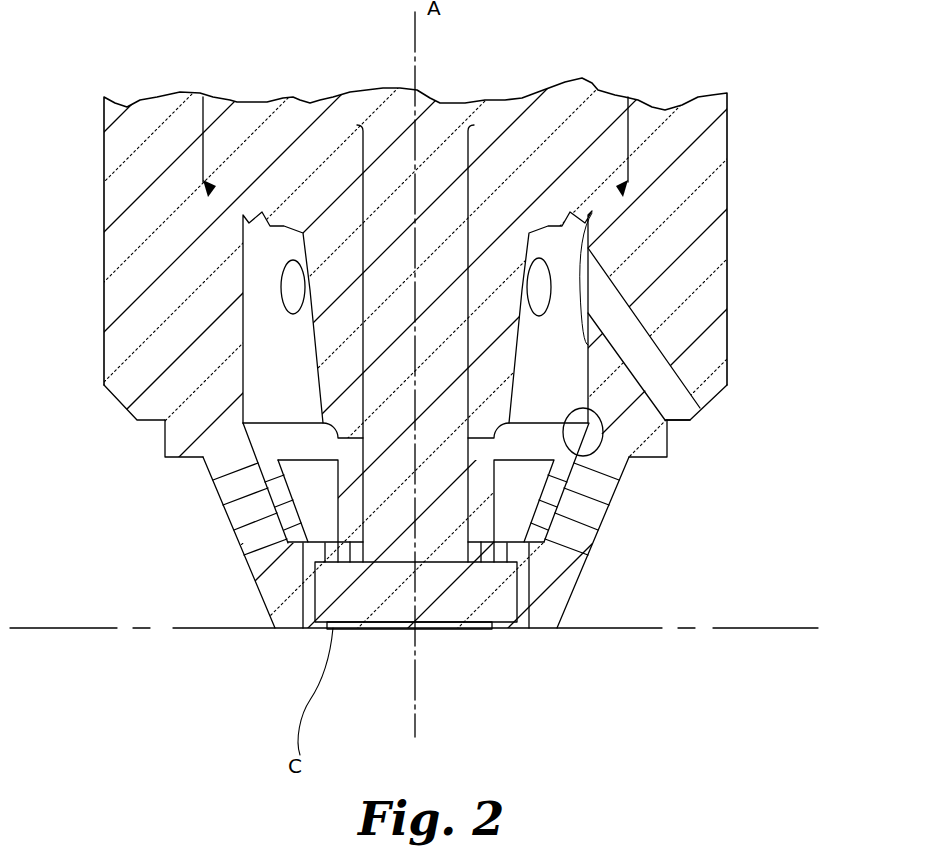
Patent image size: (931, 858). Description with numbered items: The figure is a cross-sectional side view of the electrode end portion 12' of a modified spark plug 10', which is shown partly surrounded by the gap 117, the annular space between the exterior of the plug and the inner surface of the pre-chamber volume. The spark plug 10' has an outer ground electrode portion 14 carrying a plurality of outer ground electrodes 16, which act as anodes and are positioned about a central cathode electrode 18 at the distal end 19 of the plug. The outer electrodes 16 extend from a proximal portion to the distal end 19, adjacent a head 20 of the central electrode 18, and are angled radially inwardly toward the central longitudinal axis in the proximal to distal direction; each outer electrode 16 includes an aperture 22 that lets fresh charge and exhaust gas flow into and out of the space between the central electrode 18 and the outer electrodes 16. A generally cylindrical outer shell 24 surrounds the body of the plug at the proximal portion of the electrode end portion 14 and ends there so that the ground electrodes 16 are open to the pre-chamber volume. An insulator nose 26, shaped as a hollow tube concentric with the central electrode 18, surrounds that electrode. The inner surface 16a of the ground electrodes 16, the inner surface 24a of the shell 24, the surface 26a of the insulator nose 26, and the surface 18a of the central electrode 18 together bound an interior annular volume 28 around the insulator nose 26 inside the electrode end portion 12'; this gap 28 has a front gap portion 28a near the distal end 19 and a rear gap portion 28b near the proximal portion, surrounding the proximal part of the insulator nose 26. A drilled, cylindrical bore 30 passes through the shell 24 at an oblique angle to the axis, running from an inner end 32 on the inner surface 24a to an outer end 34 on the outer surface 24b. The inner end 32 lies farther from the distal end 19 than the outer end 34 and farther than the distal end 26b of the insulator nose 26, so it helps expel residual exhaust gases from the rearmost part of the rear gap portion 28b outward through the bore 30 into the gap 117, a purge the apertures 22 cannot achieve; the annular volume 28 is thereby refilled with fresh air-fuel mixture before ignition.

The spark plug 10' is at (237, 371).
The electrode end portion 12' is at (465, 327).
The outer ground electrode portion 14 is at (236, 588).
The outer ground electrodes 16 is at (284, 612).
The inner surface of the ground electrodes 16a is at (667, 457).
The central cathode electrode 18 is at (370, 502).
The surface of the central electrode 18a is at (467, 622).
The distal end 19 is at (437, 642).
The head 20 is at (368, 600).
The aperture 22 is at (587, 510).
The outer shell 24 is at (690, 350).
The inner surface of the shell 24a is at (591, 213).
The outer surface of the shell 24b is at (717, 395).
The insulator nose 26 is at (340, 362).
The surface of the insulator nose 26a is at (572, 222).
The distal end of the insulator nose 26b is at (587, 530).
The interior annular volume 28 is at (290, 442).
The front gap portion 28a is at (327, 527).
The rear gap portion 28b is at (257, 240).
The bore 30 is at (173, 370).
The inner end of the bore 32 is at (598, 285).
The outer end of the bore 34 is at (690, 442).
The gap 117 is at (672, 578).